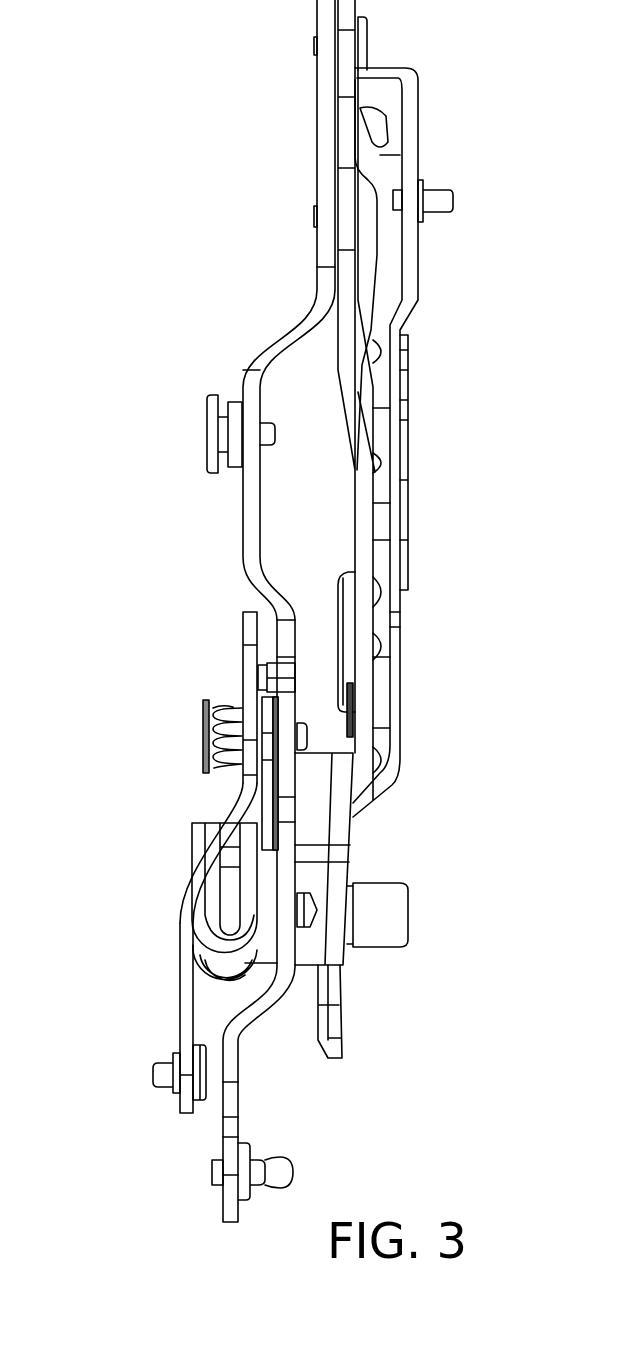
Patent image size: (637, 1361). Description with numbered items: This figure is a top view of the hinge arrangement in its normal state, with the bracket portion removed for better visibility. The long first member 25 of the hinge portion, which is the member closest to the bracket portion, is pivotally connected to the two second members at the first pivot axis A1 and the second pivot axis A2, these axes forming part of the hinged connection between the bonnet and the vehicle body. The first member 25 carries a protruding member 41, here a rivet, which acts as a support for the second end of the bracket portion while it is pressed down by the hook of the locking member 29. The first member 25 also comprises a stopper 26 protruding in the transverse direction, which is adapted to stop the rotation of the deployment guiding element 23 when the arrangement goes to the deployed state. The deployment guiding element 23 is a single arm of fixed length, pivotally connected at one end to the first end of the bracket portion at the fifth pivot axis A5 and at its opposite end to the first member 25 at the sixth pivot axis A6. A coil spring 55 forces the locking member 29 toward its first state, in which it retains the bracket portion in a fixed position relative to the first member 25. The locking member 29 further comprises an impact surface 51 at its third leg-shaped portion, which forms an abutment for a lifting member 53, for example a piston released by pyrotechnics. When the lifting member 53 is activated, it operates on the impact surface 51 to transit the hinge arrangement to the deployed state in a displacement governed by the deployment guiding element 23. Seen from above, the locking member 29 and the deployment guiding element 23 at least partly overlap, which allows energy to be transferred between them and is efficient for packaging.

The first pivot axis A1 is at (314, 45).
The second pivot axis A2 is at (314, 215).
The fifth pivot axis A5 is at (157, 1073).
The sixth pivot axis A6 is at (207, 728).
The protruding member 41 is at (207, 432).
The first member 25 is at (242, 525).
The stopper 26 is at (258, 682).
The coil spring 55 is at (227, 750).
The locking member 29 is at (232, 803).
The impact surface 51 is at (192, 857).
The lifting member 53 is at (217, 982).
The deployment guiding element 23 is at (178, 1010).